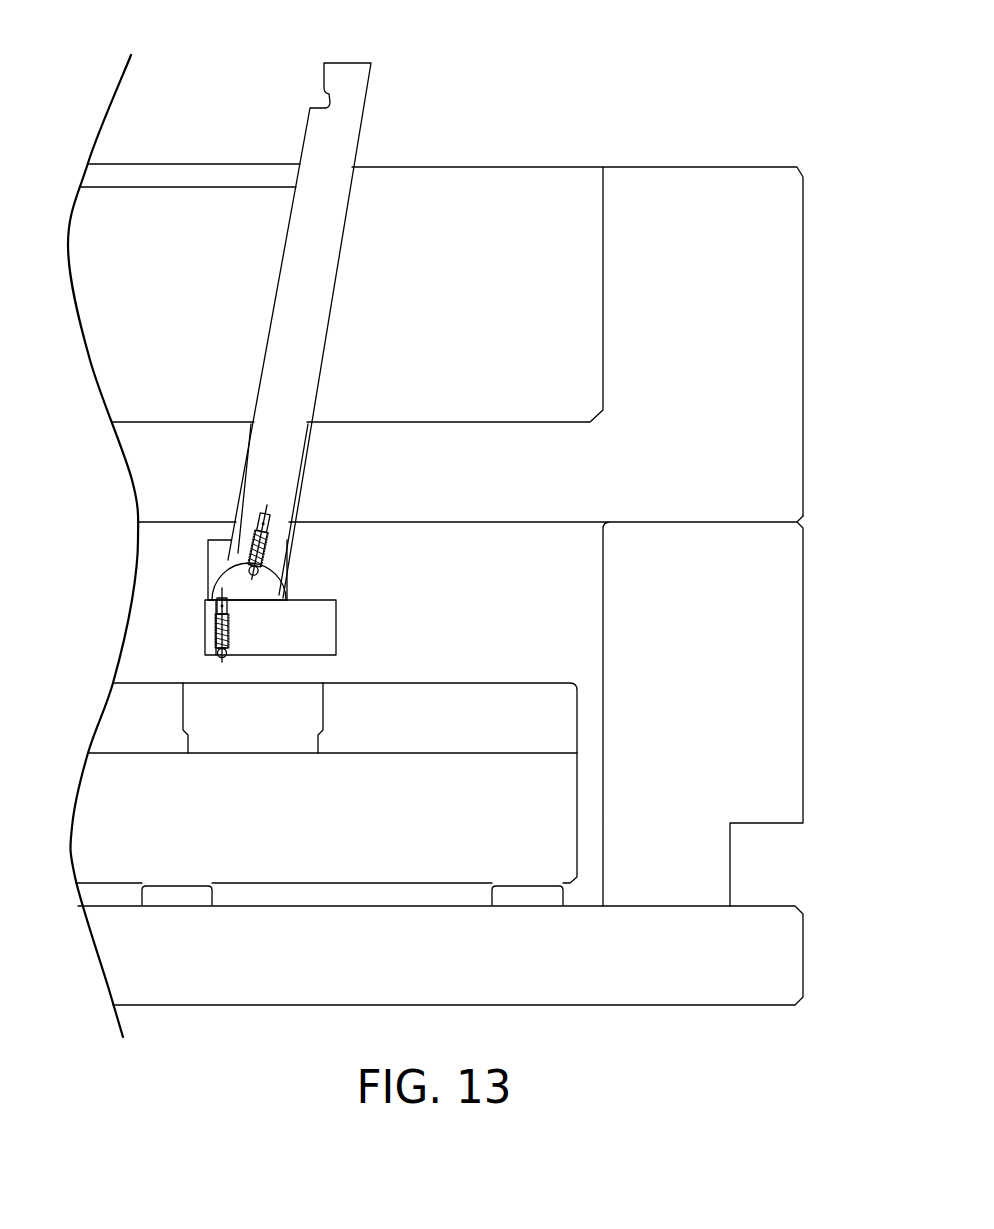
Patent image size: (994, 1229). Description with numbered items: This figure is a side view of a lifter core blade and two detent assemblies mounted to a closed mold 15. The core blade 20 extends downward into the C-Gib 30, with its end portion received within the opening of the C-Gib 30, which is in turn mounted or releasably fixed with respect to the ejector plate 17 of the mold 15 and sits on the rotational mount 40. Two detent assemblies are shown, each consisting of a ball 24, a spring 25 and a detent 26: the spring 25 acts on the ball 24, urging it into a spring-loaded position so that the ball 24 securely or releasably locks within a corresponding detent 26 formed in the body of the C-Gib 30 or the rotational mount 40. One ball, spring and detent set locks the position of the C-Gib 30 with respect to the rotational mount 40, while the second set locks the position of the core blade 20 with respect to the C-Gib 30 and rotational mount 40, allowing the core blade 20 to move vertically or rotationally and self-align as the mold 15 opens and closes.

The mold 15 is at (619, 122).
The ejector plate 17 is at (545, 613).
The core blade 20 is at (312, 262).
The ball 24 is at (233, 558).
The spring 25 is at (261, 552).
The detent 26 is at (256, 581).
The C-Gib 30 is at (212, 570).
The rotational mount 40 is at (328, 636).